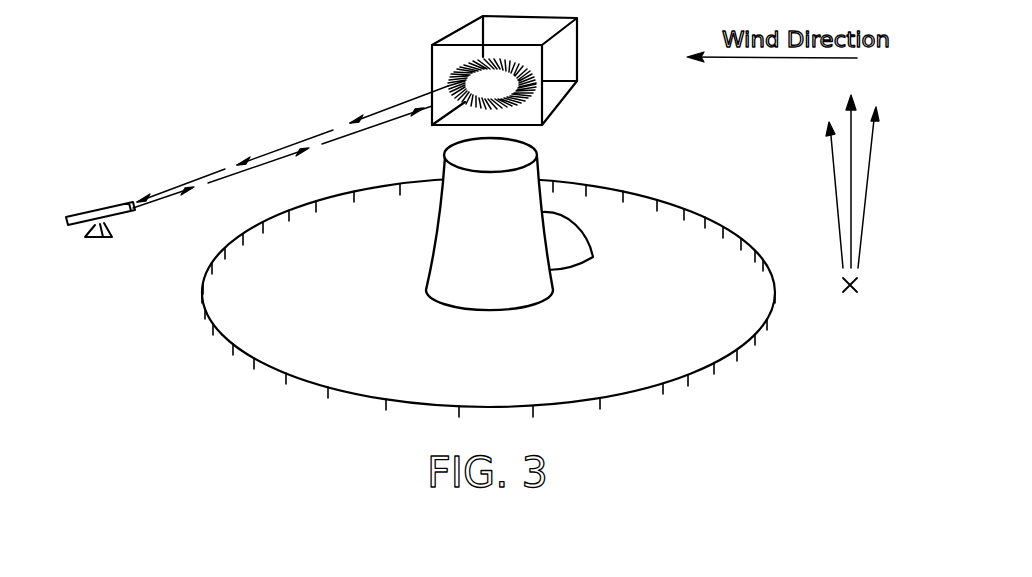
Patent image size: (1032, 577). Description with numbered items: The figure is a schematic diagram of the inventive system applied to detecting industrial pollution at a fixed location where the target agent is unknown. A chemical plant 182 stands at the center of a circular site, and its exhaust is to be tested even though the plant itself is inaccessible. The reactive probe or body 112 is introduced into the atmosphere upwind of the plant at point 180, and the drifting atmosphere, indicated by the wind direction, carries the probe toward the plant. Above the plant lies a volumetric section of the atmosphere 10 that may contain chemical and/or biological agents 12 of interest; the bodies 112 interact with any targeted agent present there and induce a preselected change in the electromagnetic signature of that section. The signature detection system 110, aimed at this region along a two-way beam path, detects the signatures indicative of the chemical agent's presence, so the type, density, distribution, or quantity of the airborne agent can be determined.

The volumetric section of the atmosphere 10 is at (578, 50).
The chemical and/or biological agents 12 is at (462, 74).
The signature detection system 110 is at (98, 218).
The reactive probe or body 112 is at (834, 189).
The point upwind of the plant 180 is at (847, 293).
The chemical plant 182 is at (462, 318).